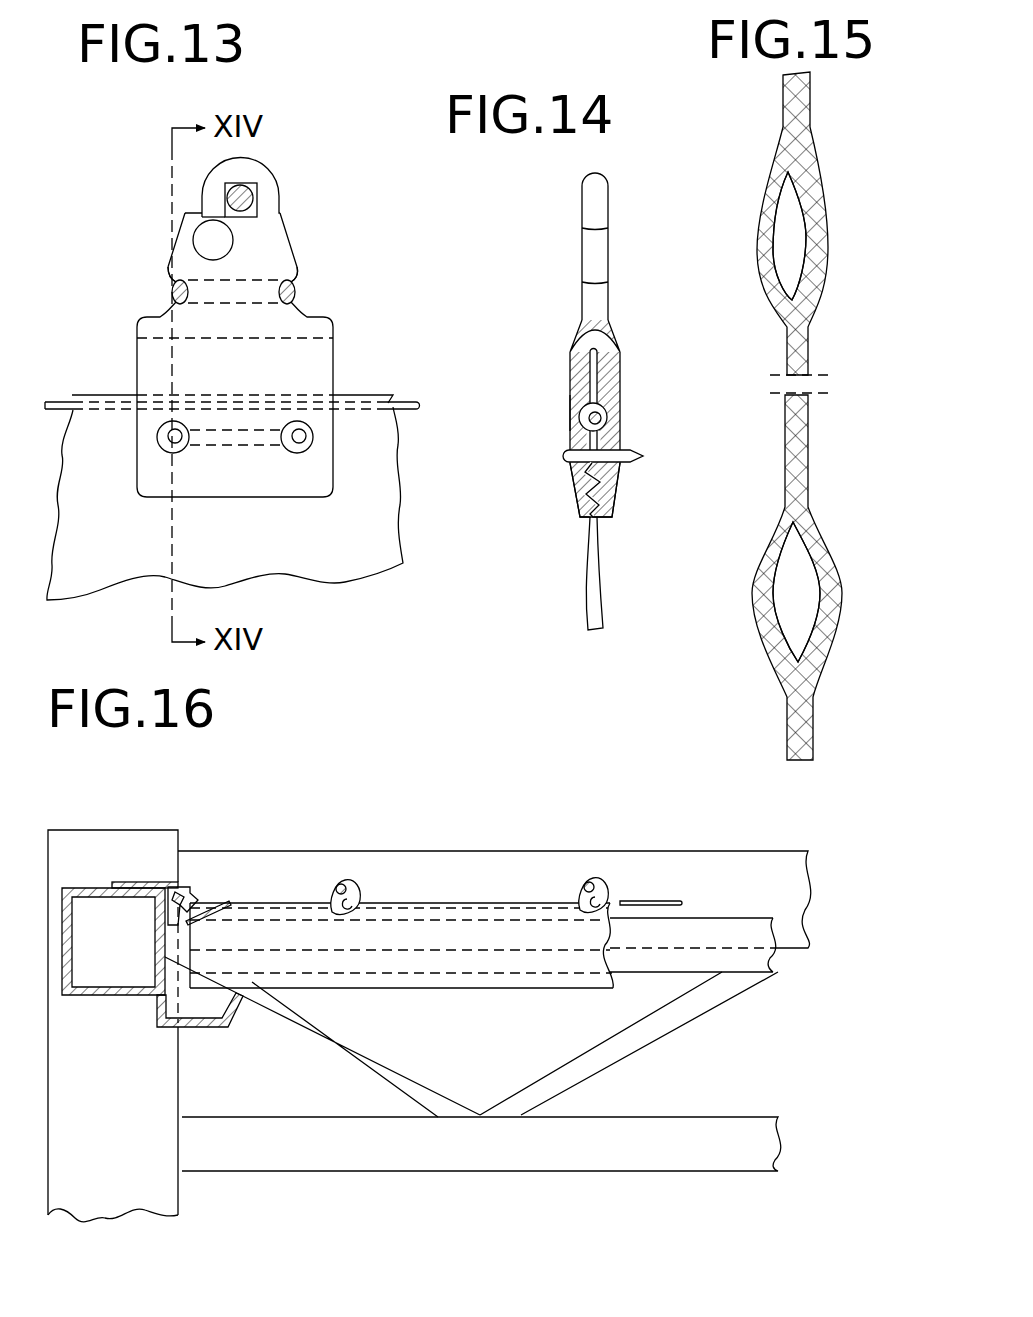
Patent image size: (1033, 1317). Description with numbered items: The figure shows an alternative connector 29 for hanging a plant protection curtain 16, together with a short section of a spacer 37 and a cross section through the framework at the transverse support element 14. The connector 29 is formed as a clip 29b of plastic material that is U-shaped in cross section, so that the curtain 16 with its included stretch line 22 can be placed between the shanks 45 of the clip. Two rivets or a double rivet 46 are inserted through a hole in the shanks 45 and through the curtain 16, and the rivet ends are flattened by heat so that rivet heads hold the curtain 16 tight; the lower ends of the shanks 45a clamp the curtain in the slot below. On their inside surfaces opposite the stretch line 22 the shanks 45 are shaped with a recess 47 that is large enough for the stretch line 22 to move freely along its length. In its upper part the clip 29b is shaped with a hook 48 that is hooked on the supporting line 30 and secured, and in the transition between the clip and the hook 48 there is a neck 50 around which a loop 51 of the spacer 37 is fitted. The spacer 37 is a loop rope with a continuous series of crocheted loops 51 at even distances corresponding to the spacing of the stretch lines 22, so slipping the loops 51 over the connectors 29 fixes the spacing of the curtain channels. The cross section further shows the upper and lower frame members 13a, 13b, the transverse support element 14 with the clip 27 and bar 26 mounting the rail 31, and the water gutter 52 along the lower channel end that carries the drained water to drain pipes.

In FIG. 16, the upper frame beam 13a is at (603, 860).
In FIG. 16, the lower frame member 13b is at (700, 947).
In FIG. 16, the transverse support element 14 is at (100, 887).
In FIG. 13, the curtain 16 is at (345, 557).
In FIG. 14, the curtain 16 is at (602, 597).
In FIG. 16, the curtain 16 is at (443, 943).
In FIG. 13, the stretch line 22 is at (403, 403).
In FIG. 14, the stretch line 22 is at (572, 405).
In FIG. 16, the stretch line 22 is at (655, 902).
In FIG. 16, the mounting bar 26 is at (227, 903).
In FIG. 16, the clip 27 is at (180, 887).
In FIG. 16, the connector 29 is at (362, 887).
In FIG. 13, the clip 29b is at (345, 303).
In FIG. 14, the clip 29b is at (606, 410).
In FIG. 13, the support line 30 is at (257, 200).
In FIG. 16, the support line 30 is at (350, 880).
In FIG. 13, the pivot pin 31 is at (121, 393).
In FIG. 14, the pivot pin 31 is at (607, 413).
In FIG. 16, the pivot pin 31 is at (527, 898).
In FIG. 15, the spacer 37 is at (802, 480).
In FIG. 14, the shank 45 is at (628, 387).
In FIG. 14, the jaw 45a is at (545, 553).
In FIG. 13, the rivet 46 is at (173, 437).
In FIG. 14, the rivet 46 is at (567, 452).
In FIG. 14, the recess 47 is at (570, 383).
In FIG. 13, the hook 48 is at (268, 180).
In FIG. 14, the hook 48 is at (597, 213).
In FIG. 13, the neck 50 is at (293, 275).
In FIG. 13, the loop 51 is at (172, 290).
In FIG. 15, the loop 51 is at (812, 605).
In FIG. 16, the water gutter 52 is at (203, 1023).